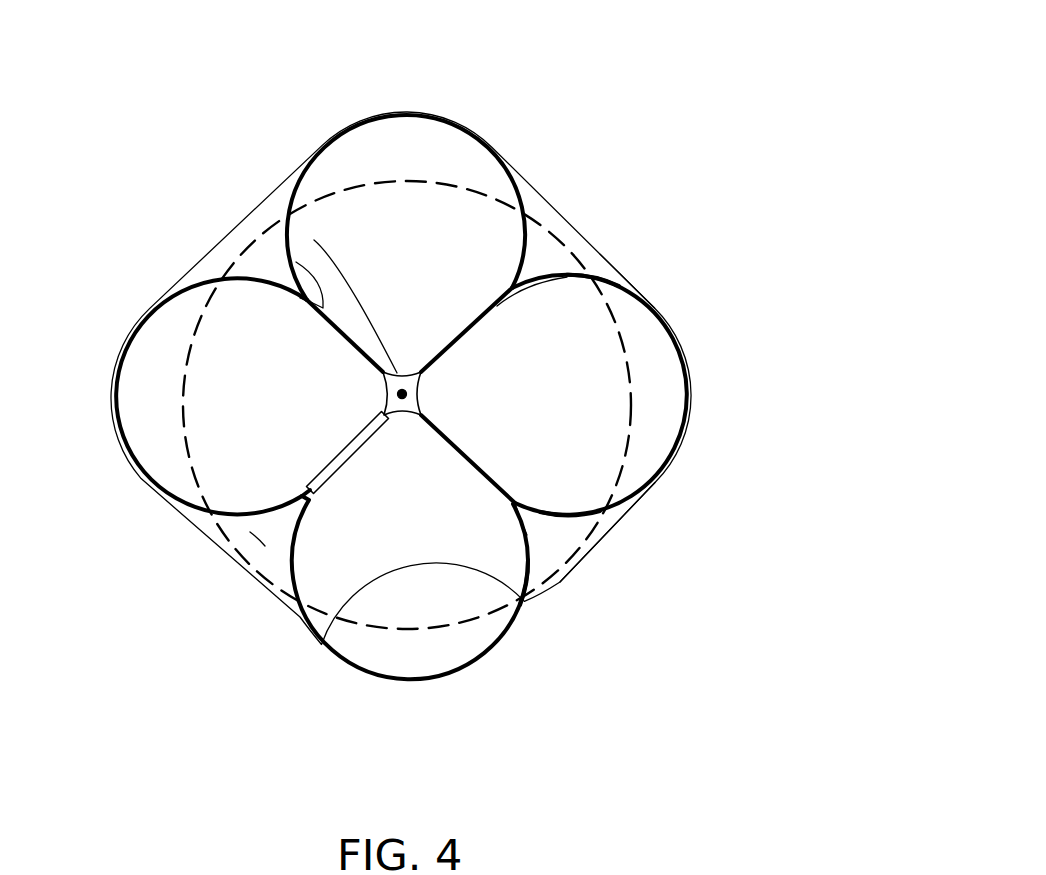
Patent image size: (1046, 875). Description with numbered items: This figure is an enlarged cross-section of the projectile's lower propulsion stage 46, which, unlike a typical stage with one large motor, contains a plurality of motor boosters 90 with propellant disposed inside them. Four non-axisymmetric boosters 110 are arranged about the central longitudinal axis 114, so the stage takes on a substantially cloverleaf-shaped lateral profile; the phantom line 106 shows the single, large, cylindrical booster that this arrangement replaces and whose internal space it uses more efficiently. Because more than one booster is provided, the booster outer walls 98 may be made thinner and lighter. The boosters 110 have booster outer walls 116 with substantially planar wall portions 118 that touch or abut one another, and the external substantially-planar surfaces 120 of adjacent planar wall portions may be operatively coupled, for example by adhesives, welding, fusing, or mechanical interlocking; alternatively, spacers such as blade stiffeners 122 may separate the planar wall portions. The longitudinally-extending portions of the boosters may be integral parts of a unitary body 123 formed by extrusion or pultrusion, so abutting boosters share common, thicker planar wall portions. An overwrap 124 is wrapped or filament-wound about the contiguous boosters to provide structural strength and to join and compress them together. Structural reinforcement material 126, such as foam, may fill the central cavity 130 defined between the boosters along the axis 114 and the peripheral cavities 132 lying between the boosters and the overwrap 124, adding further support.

The propulsion stage 46 is at (638, 129).
The motor boosters 90 is at (445, 156).
The booster outer walls 98 is at (572, 512).
The phantom line 106 is at (525, 590).
The non-axisymmetric boosters 110 is at (622, 288).
The central longitudinal axis 114 is at (398, 395).
The booster outer walls 116 is at (618, 290).
The planar wall portions 118 is at (510, 307).
The external substantially-planar surfaces 120 is at (322, 305).
The blade stiffeners 122 is at (312, 597).
The unitary body 123 is at (690, 394).
The overwrap 124 is at (623, 517).
The structural reinforcement material 126 is at (314, 240).
The central cavity 130 is at (400, 378).
The peripheral cavities 132 is at (268, 553).